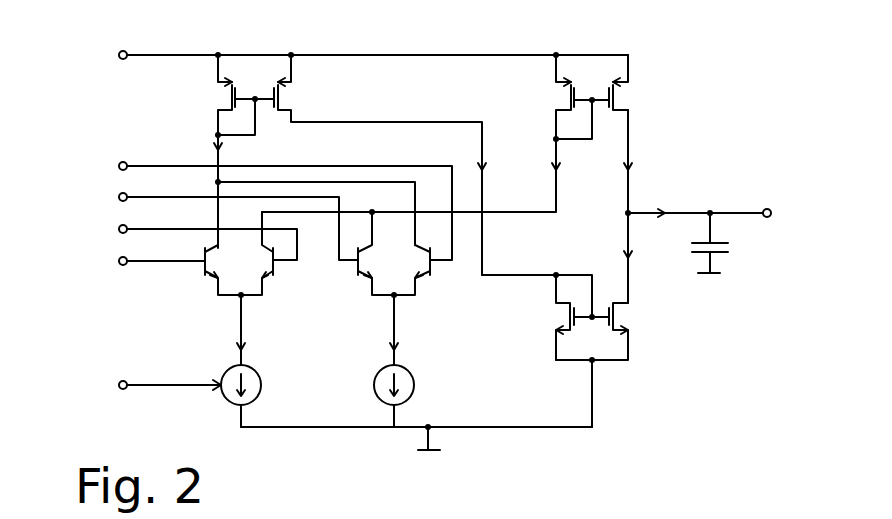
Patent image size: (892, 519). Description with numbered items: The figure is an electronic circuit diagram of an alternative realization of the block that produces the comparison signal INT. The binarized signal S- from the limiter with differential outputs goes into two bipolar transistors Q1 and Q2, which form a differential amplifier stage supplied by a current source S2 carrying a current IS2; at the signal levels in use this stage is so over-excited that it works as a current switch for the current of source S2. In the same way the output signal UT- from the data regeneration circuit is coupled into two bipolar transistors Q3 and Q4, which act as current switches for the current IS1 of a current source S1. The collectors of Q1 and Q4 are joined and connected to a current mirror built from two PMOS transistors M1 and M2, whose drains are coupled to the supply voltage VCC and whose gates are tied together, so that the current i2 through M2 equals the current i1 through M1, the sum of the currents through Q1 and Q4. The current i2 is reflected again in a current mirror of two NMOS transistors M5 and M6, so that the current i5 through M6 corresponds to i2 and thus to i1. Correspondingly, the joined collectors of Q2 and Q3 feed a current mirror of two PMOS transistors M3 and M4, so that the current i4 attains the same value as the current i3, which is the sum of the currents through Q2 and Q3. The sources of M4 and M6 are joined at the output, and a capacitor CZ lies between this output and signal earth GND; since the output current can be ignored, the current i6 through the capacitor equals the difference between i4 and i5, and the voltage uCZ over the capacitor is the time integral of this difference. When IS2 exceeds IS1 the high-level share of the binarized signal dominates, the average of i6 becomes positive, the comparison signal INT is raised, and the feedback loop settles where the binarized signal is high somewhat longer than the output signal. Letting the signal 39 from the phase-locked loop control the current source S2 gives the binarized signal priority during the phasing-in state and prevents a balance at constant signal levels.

The signal from the phase-locked loop 39 is at (146, 385).
The PMOS transistor M1 is at (230, 98).
The PMOS transistor M2 is at (280, 98).
The PMOS transistor M3 is at (569, 101).
The PMOS transistor M4 is at (616, 101).
The NMOS transistor M5 is at (571, 318).
The NMOS transistor M6 is at (616, 318).
The bipolar transistor Q1 is at (196, 282).
The bipolar transistor Q2 is at (284, 282).
The bipolar transistor Q3 is at (350, 282).
The bipolar transistor Q4 is at (438, 282).
The current source S1 is at (415, 382).
The current source S2 is at (262, 382).
The current through the current source S1 IS1 is at (397, 349).
The current through the current source S2 IS2 is at (243, 349).
The current through M1 i1 is at (216, 148).
The current through M2 i2 is at (484, 170).
The current i3 is at (558, 170).
The current i4 is at (630, 170).
The current through the transistor M6 i5 is at (626, 258).
The current through the capacitor i6 is at (663, 212).
The capacitor CZ is at (692, 250).
The voltage over the capacitor CZ uCZ is at (758, 249).
The comparison signal INT is at (720, 213).
The supply voltage VCC is at (344, 57).
The output signal UT- is at (207, 223).
The binarized signal S- is at (135, 261).
The signal earth GND is at (416, 437).